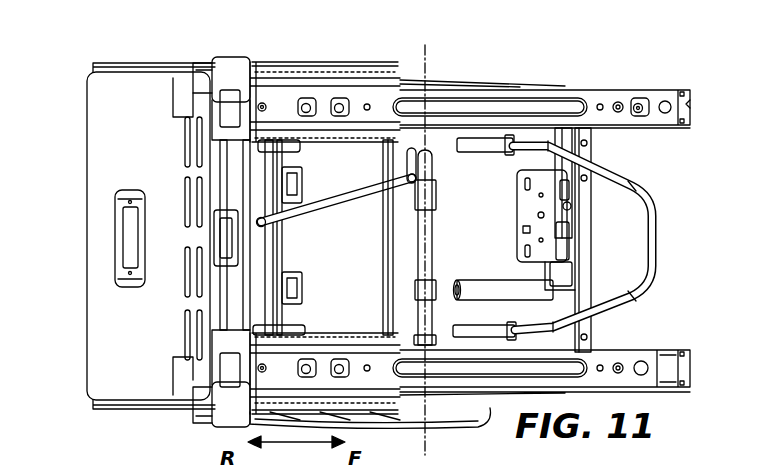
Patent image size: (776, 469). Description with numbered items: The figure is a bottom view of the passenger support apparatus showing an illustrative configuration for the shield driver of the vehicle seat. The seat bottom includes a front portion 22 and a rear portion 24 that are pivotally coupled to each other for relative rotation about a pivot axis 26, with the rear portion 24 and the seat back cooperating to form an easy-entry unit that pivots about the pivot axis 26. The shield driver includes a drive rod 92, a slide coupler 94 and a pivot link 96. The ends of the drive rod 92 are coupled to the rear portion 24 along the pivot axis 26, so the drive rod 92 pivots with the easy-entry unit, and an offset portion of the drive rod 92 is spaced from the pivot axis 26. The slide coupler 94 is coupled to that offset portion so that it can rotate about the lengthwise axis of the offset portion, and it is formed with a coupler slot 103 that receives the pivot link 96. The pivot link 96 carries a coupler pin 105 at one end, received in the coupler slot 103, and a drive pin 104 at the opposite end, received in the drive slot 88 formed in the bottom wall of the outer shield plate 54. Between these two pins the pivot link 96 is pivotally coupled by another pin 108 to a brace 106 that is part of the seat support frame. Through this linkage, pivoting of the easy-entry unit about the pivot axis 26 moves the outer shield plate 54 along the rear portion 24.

The front portion 22 is at (542, 137).
The rear portion 24 is at (362, 157).
The pivot axis 26 is at (428, 62).
The outer shield plate 54 is at (240, 183).
The drive slot 88 is at (268, 288).
The drive rod 92 is at (425, 307).
The slide coupler 94 is at (436, 197).
The pivot link 96 is at (358, 194).
The coupler slot 103 is at (440, 152).
The drive pin 104 is at (267, 224).
The coupler pin 105 is at (416, 177).
The brace 106 is at (395, 157).
The pin 108 is at (396, 152).